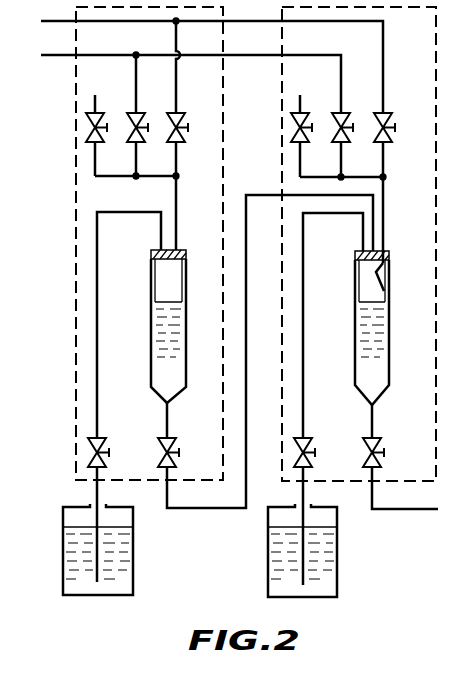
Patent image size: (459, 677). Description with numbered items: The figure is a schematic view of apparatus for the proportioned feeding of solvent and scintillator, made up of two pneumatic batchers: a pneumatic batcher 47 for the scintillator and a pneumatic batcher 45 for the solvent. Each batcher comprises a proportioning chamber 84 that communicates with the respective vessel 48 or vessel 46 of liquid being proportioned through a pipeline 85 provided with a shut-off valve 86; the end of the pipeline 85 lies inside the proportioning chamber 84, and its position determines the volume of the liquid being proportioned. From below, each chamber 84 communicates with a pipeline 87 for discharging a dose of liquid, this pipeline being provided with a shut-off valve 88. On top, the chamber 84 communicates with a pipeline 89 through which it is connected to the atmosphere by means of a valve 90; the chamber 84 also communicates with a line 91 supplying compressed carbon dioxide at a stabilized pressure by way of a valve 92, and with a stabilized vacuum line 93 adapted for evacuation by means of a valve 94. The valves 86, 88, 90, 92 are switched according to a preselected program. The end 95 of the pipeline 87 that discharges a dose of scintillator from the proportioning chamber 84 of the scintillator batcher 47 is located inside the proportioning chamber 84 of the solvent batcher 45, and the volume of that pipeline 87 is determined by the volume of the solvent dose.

The pneumatic batcher 45 is at (282, 96).
The vessel 46 is at (348, 551).
The pneumatic batcher 47 is at (76, 170).
The vessel 48 is at (147, 551).
The proportioning chamber 84 is at (186, 353).
The pipeline 85 is at (102, 328).
The shut-off valve 86 is at (110, 452).
The pipeline 87 is at (164, 473).
The shut-off valve 88 is at (179, 452).
The pipeline 89 is at (178, 225).
The valve 90 is at (97, 108).
The line 91 is at (41, 56).
The valve 92 is at (138, 108).
The vacuum line 93 is at (41, 22).
The valve 94 is at (184, 108).
The end 95 is at (388, 268).